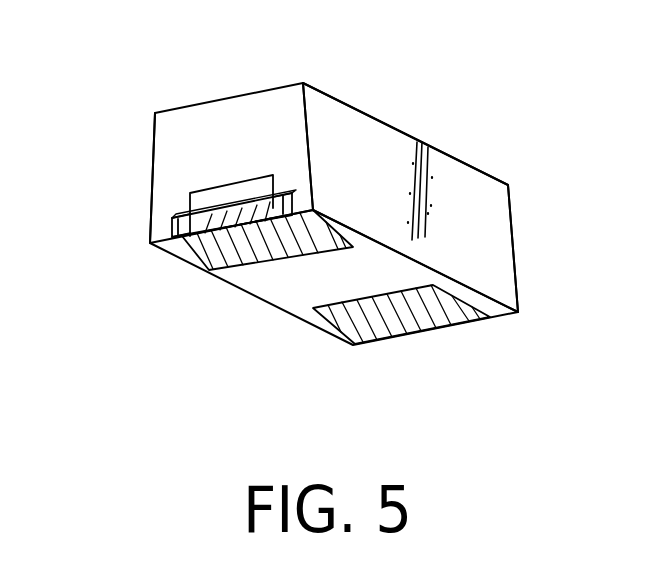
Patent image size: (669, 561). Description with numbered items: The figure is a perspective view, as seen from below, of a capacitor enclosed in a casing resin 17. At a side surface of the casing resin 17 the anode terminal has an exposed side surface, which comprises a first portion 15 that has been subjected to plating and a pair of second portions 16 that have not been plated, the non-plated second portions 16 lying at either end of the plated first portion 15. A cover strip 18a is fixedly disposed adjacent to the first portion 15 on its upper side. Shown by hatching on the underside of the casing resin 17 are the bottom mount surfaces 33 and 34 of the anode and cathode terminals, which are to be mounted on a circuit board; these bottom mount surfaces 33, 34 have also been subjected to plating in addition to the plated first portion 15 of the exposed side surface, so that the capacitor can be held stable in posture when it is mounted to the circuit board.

The first portion 15 is at (187, 213).
The second portions 16 is at (280, 198).
The casing resin 17 is at (492, 236).
The cover strip 18a is at (230, 193).
The bottom mount surface 33 is at (252, 245).
The bottom mount surface 34 is at (400, 317).